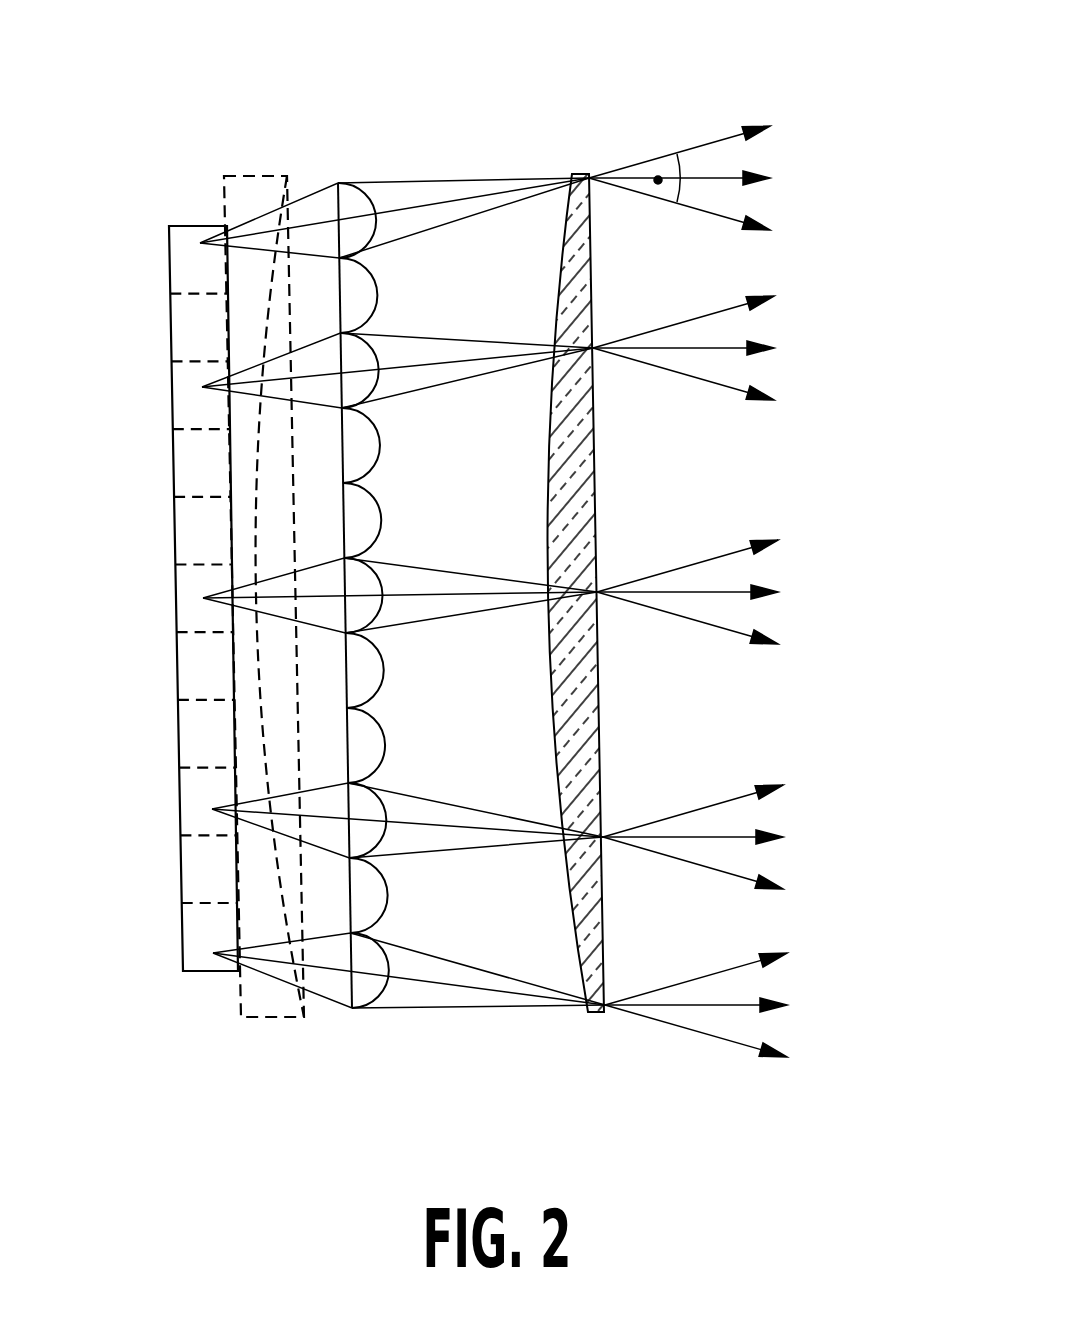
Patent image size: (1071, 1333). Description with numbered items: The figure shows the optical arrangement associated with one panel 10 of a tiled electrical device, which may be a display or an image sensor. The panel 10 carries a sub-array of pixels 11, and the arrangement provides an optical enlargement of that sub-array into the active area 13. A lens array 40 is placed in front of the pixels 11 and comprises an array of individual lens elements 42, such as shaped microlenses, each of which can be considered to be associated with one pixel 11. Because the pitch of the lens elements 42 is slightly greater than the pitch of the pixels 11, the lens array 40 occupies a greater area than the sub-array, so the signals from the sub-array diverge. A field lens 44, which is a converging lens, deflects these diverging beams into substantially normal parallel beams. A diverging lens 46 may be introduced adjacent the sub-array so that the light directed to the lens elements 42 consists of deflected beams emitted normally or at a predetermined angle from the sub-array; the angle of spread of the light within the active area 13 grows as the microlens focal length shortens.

The panel 10 is at (177, 600).
The pixels 11 is at (185, 265).
The active area 13 is at (912, 57).
The lens array 40 is at (386, 121).
The lens elements 42 is at (372, 983).
The field lens 44 is at (583, 173).
The diverging lens 46 is at (248, 176).